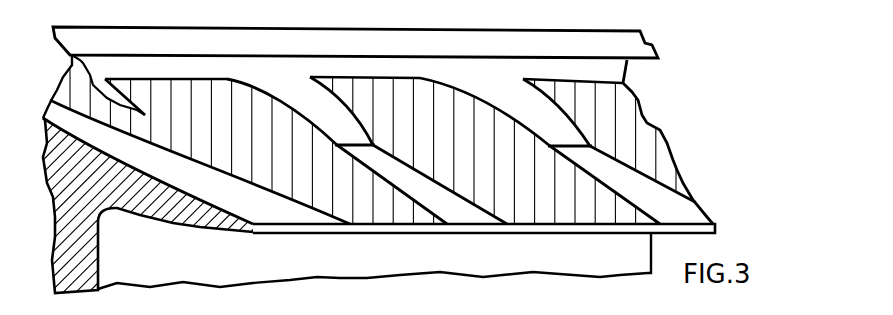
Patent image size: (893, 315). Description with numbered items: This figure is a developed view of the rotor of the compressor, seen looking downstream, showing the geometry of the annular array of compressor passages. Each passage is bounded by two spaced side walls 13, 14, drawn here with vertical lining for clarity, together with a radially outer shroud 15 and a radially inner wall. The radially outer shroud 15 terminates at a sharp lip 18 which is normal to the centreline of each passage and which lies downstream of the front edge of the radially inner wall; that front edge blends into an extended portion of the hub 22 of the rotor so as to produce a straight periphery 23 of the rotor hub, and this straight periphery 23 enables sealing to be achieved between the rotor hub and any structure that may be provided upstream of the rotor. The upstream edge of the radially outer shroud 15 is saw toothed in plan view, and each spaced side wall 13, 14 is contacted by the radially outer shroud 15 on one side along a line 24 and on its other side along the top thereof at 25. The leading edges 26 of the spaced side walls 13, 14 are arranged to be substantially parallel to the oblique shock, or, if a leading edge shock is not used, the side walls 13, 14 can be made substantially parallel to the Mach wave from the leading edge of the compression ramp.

The side wall 13 is at (620, 213).
The side wall 14 is at (366, 182).
The radially outer shroud 15 is at (404, 60).
The sharp lip 18 is at (347, 138).
The hub 22 is at (177, 213).
The straight periphery 23 is at (374, 226).
The line 24 is at (365, 122).
The top contact 25 is at (287, 100).
The leading edges 26 is at (412, 193).